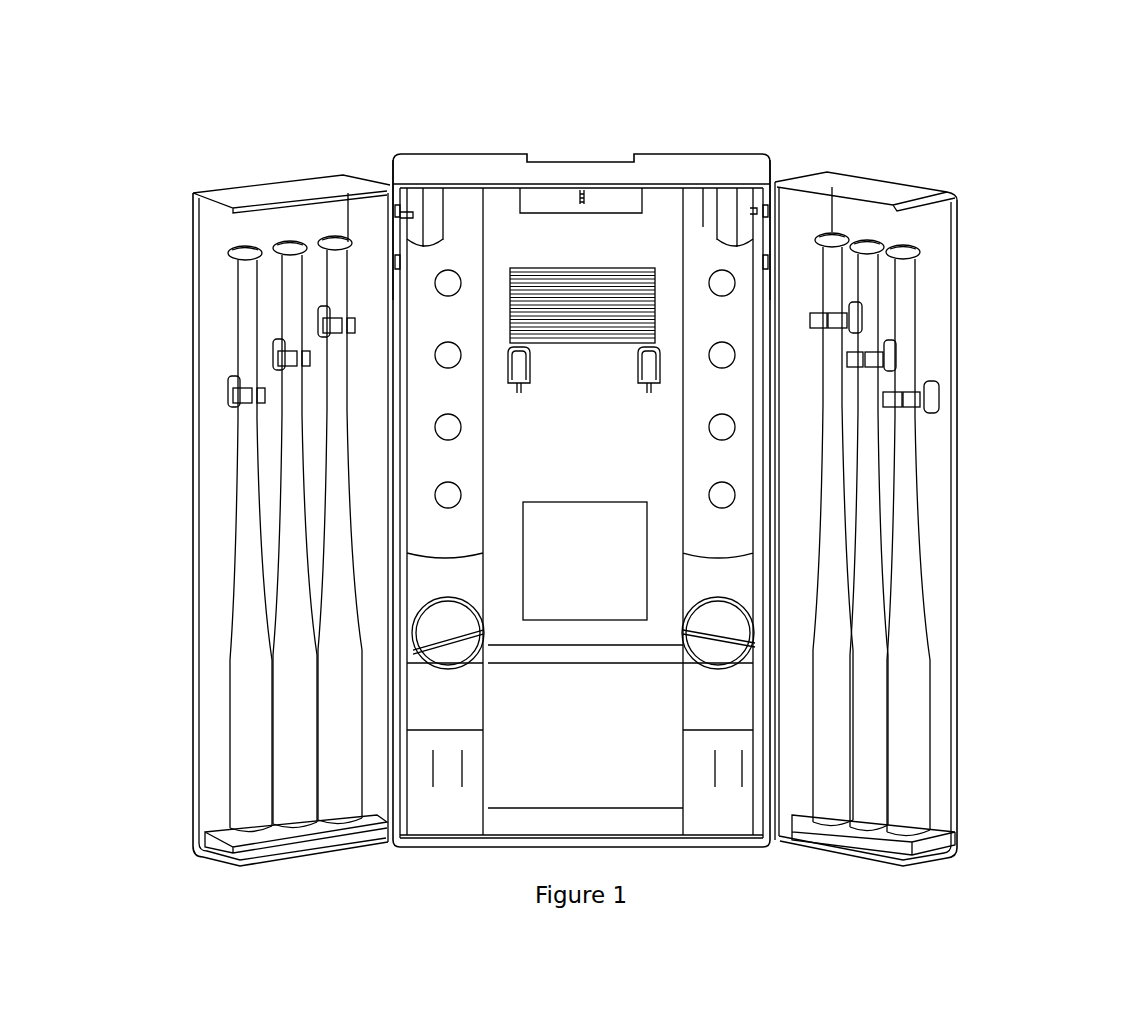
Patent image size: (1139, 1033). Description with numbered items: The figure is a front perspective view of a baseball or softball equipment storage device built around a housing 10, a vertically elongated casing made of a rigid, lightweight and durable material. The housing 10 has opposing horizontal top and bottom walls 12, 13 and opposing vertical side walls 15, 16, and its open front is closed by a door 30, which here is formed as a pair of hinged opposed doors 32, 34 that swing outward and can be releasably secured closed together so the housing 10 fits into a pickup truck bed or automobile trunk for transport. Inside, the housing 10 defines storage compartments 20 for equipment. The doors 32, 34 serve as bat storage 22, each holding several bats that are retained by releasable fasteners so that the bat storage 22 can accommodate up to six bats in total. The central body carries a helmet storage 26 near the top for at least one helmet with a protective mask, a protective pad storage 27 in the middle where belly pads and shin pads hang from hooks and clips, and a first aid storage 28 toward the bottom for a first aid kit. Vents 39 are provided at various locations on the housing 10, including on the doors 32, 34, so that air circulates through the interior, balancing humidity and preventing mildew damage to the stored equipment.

The housing 10 is at (1015, 160).
The top wall 12 is at (497, 153).
The bottom wall 13 is at (720, 845).
The side wall 15 is at (772, 160).
The side wall 16 is at (393, 172).
The compartment 20 is at (660, 468).
The bat storage 22 is at (213, 493).
The helmet storage 26 is at (598, 242).
The protective pad storage 27 is at (560, 453).
The first aid storage 28 is at (543, 785).
The door 30 is at (1018, 576).
The hinged door 32 is at (847, 183).
The hinged door 34 is at (262, 192).
The vent 39 is at (577, 267).